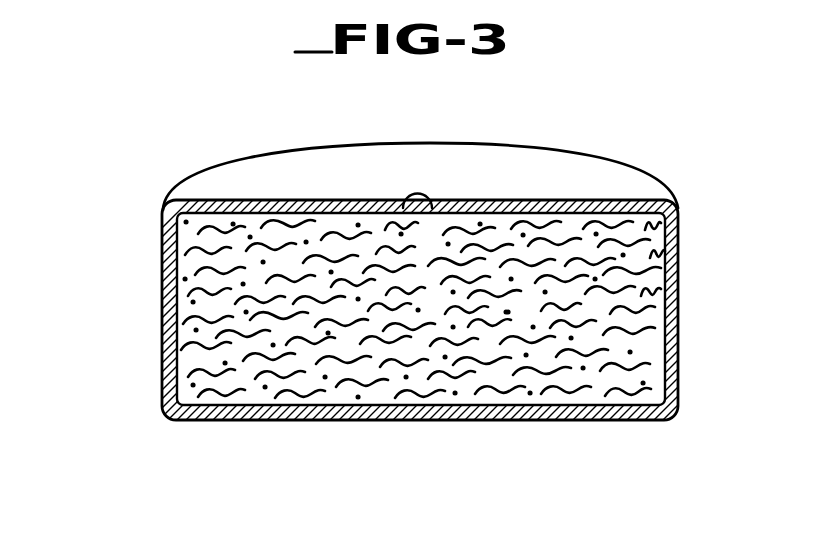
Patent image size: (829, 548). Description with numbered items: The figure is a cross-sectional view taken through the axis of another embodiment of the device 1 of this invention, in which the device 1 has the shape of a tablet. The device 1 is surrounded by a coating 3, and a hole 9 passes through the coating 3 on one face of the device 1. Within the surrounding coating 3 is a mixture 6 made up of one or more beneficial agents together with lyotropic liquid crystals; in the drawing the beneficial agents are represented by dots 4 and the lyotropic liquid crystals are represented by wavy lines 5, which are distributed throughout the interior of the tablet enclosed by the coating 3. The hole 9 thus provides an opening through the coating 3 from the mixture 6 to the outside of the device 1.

The device 1 is at (590, 155).
The coating 3 is at (612, 420).
The dots 4 is at (640, 294).
The wavy lines 5 is at (372, 385).
The mixture 6 is at (185, 360).
The hole 9 is at (400, 207).